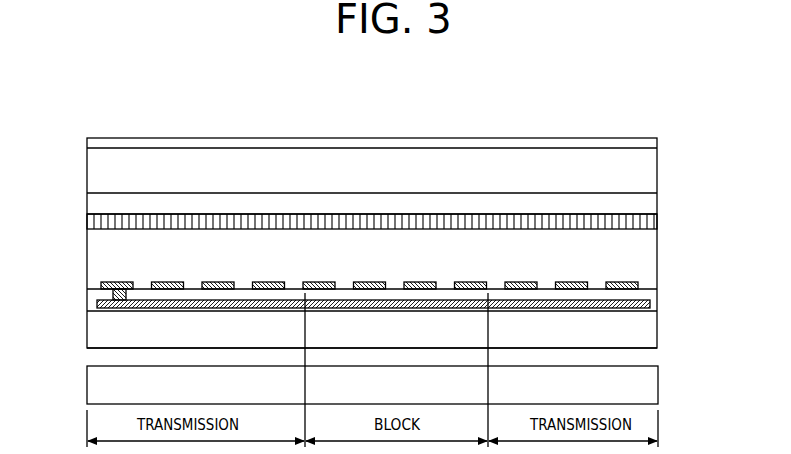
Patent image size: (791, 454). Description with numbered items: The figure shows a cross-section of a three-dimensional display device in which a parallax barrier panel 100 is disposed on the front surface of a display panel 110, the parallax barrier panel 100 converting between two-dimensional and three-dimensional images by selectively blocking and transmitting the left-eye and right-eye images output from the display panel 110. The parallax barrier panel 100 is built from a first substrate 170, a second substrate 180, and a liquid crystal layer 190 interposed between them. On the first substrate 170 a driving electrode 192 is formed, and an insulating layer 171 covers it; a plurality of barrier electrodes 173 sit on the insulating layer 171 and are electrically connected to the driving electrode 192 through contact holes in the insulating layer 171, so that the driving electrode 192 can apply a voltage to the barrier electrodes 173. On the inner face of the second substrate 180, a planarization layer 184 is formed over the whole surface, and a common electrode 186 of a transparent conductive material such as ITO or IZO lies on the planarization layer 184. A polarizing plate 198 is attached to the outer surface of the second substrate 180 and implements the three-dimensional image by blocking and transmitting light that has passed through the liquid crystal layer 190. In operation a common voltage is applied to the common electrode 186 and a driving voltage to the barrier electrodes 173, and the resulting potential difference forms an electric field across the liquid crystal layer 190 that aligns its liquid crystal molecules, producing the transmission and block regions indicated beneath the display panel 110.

The parallax barrier panel 100 is at (719, 337).
The polarizing plate 198 is at (655, 141).
The second substrate 180 is at (655, 169).
The planarization layer 184 is at (655, 201).
The common electrode 186 is at (655, 221).
The liquid crystal layer 190 is at (655, 258).
The barrier electrodes 173 is at (524, 282).
The driving electrode 192 is at (443, 300).
The insulating layer 171 is at (650, 298).
The first substrate 170 is at (655, 329).
The display panel 110 is at (656, 385).